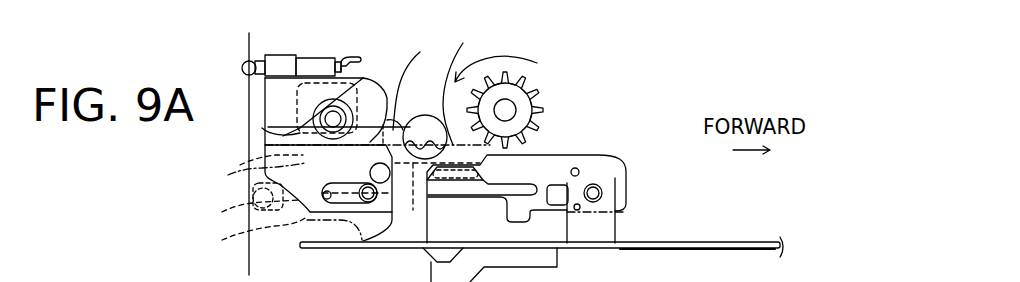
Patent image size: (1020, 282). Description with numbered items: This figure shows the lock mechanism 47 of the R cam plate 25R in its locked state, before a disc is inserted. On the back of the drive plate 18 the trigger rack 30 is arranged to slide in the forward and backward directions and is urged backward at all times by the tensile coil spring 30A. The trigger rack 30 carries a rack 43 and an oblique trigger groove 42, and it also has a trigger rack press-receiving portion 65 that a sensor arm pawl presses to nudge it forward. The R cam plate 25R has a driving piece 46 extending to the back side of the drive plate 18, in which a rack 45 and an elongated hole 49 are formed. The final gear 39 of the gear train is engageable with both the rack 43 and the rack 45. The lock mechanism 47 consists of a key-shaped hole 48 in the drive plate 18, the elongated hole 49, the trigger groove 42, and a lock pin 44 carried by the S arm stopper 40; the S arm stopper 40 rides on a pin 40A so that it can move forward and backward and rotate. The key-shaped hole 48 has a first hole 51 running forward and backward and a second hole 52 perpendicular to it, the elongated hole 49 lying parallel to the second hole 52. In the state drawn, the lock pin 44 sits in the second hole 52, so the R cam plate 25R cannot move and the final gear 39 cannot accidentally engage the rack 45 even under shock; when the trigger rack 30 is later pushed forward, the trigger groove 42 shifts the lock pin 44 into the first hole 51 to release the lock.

The drive plate 18 is at (618, 116).
The R cam plate 25R is at (687, 252).
The trigger rack 30 is at (627, 180).
The tensile coil spring 30A is at (315, 58).
The final gear 39 is at (543, 90).
The S arm stopper 40 is at (222, 240).
The pin 40A is at (220, 212).
The trigger groove 42 is at (252, 103).
The rack 43 is at (486, 83).
The lock pin 44 is at (386, 112).
The rack 45 is at (496, 69).
The driving piece 46 is at (278, 55).
The lock mechanism 47 is at (544, 44).
The key-shaped hole 48 is at (421, 80).
The elongated hole 49 is at (217, 188).
The first hole 51 is at (403, 110).
The second hole 52 is at (265, 136).
The trigger rack press-receiving portion 65 is at (500, 214).